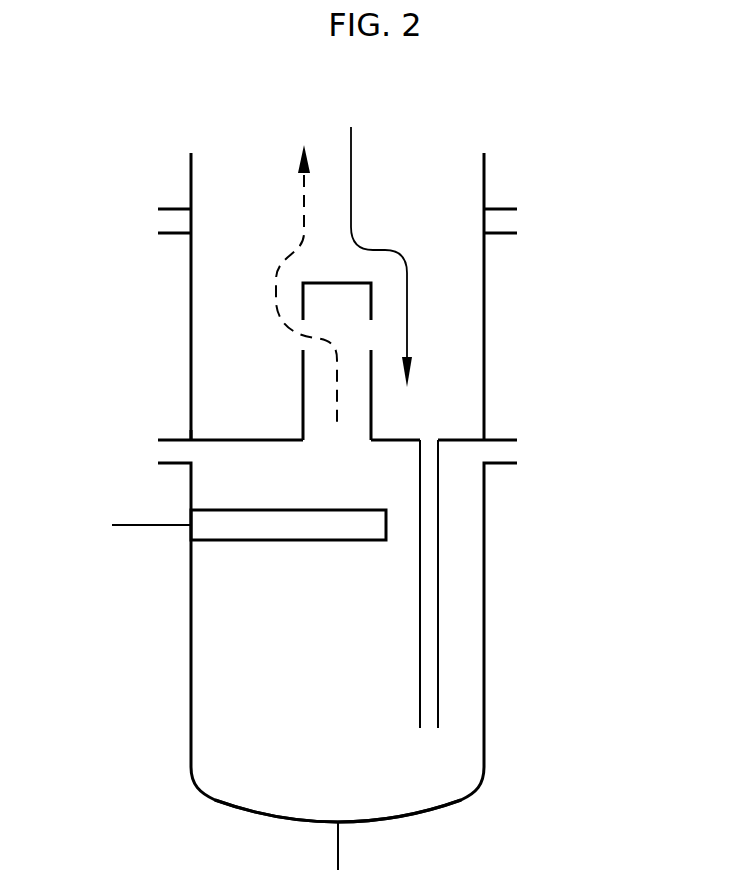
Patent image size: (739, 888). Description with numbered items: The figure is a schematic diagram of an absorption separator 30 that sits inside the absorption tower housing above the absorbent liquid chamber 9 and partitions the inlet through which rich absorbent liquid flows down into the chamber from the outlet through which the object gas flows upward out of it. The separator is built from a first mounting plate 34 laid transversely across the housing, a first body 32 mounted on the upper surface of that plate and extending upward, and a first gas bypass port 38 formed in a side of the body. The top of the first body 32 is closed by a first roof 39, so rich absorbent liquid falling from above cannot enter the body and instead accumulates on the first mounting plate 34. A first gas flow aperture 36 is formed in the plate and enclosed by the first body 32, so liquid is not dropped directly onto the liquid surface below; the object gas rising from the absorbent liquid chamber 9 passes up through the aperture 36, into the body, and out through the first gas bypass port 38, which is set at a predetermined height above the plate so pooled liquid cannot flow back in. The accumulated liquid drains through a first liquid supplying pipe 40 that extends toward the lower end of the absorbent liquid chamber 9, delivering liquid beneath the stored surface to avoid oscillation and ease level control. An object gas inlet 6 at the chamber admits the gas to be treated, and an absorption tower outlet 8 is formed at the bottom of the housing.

The absorption separator 30 is at (437, 270).
The first gas bypass port 38 is at (371, 333).
The first body 32 is at (371, 410).
The first roof 39 is at (333, 282).
The first mounting plate 34 is at (233, 440).
The first gas flow aperture 36 is at (328, 440).
The object gas inlet 6 is at (133, 530).
The first liquid supplying pipe 40 is at (428, 607).
The absorbent liquid chamber 9 is at (251, 800).
The absorption tower outlet 8 is at (338, 845).